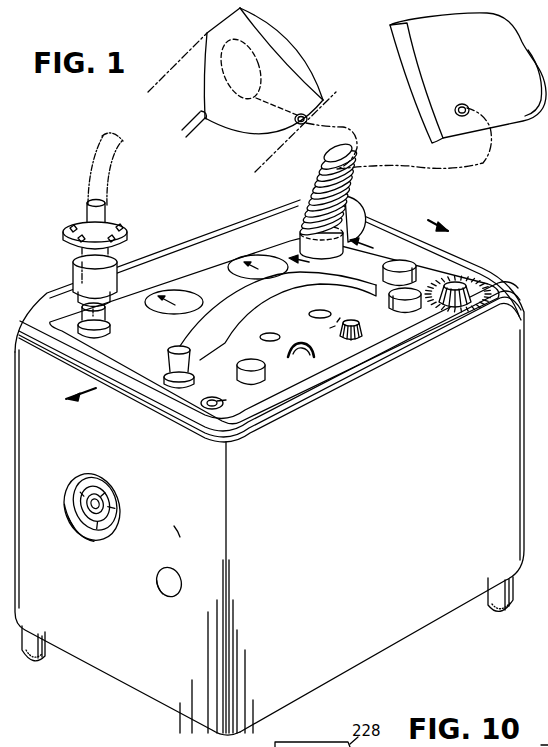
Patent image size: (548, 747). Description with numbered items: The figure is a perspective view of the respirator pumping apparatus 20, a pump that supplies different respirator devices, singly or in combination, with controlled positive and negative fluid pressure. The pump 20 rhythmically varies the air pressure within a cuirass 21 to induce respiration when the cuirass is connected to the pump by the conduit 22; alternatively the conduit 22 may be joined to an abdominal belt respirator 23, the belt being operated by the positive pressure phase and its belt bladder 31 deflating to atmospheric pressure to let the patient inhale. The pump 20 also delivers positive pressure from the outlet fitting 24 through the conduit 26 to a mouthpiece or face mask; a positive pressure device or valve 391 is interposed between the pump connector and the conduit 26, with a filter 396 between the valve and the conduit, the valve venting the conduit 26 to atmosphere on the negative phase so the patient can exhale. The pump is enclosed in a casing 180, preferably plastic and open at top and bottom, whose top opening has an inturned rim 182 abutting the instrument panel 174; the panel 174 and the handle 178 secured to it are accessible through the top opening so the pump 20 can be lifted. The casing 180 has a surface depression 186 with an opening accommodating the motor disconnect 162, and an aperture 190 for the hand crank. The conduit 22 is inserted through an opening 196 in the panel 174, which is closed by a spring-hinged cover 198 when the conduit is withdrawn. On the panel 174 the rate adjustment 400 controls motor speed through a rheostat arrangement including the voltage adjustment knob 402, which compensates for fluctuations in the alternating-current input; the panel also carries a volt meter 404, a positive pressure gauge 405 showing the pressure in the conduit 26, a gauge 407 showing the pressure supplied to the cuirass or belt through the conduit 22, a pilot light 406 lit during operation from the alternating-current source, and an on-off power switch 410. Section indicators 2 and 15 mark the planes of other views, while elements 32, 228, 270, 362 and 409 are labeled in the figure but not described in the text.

The respirator pumping apparatus 20 is at (113, 680).
The cuirass 21 is at (503, 36).
The conduit 22 is at (352, 187).
The abdominal belt respirator 23 is at (206, 45).
The outlet fitting 24 is at (105, 322).
The conduit 26 is at (92, 162).
The belt bladder 31 is at (218, 82).
The feet 32 is at (24, 657).
The section line 2 is at (251, 310).
The section line 15 is at (331, 253).
The motor disconnect 162 is at (73, 524).
The instrument panel 174 is at (197, 283).
The handle 178 is at (247, 303).
The casing 180 is at (402, 622).
The inturned rim 182 is at (213, 254).
The surface depression 186 is at (101, 532).
The aperture 190 is at (167, 584).
The opening 196 is at (302, 247).
The cover 198 is at (362, 207).
The knob 228 is at (403, 309).
The knob 270 is at (414, 262).
The button 362 is at (266, 372).
The positive pressure device 391 is at (72, 279).
The filter 396 is at (66, 233).
The rate adjustment 400 is at (458, 285).
The voltage adjustment knob 402 is at (353, 338).
The volt meter 404 is at (314, 355).
The positive pressure gauge 405 is at (148, 303).
The pilot light 406 is at (269, 335).
The gauge 407 is at (262, 262).
The button 409 is at (318, 311).
The on-off power switch 410 is at (222, 400).